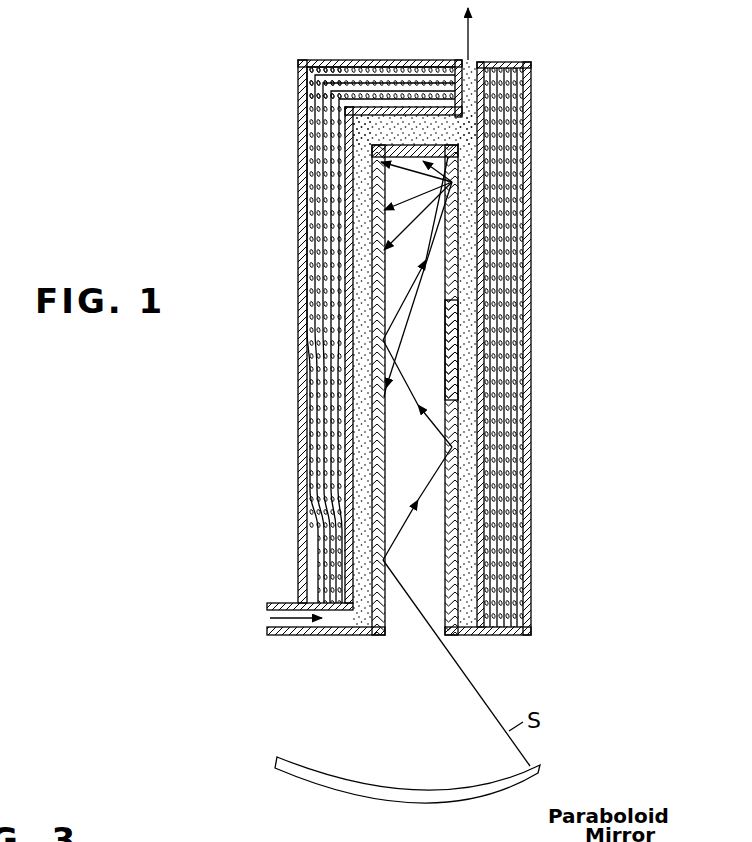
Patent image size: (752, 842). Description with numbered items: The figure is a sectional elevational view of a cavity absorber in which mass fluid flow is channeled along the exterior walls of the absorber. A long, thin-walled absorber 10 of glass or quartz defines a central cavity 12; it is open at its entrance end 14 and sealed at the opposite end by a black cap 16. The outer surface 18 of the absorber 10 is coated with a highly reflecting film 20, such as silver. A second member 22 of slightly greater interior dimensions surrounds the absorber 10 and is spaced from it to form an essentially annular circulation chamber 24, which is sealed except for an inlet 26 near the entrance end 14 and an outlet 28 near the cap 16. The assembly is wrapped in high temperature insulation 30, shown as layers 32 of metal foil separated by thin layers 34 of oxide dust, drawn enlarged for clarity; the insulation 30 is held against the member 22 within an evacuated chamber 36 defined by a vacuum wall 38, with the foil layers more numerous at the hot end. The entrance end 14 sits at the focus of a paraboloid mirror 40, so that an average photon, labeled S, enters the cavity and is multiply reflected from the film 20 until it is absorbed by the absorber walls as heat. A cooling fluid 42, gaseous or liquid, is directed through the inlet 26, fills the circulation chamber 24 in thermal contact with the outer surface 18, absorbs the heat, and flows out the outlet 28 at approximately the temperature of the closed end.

The absorber 10 is at (526, 371).
The central cavity 12 is at (445, 358).
The entrance end 14 is at (402, 638).
The black cap 16 is at (425, 142).
The outer surface 18 is at (460, 211).
The reflecting film 20 is at (476, 375).
The second member 22 is at (348, 187).
The circulation chamber 24 is at (355, 300).
The inlet 26 is at (266, 623).
The outlet 28 is at (472, 60).
The insulation 30 is at (332, 331).
The layers of metal foil 32 is at (323, 265).
The layers of oxide dust 34 is at (346, 335).
The evacuated chamber 36 is at (308, 537).
The vacuum wall 38 is at (300, 467).
The paraboloid mirror 40 is at (477, 797).
The cooling fluid 42 is at (470, 606).